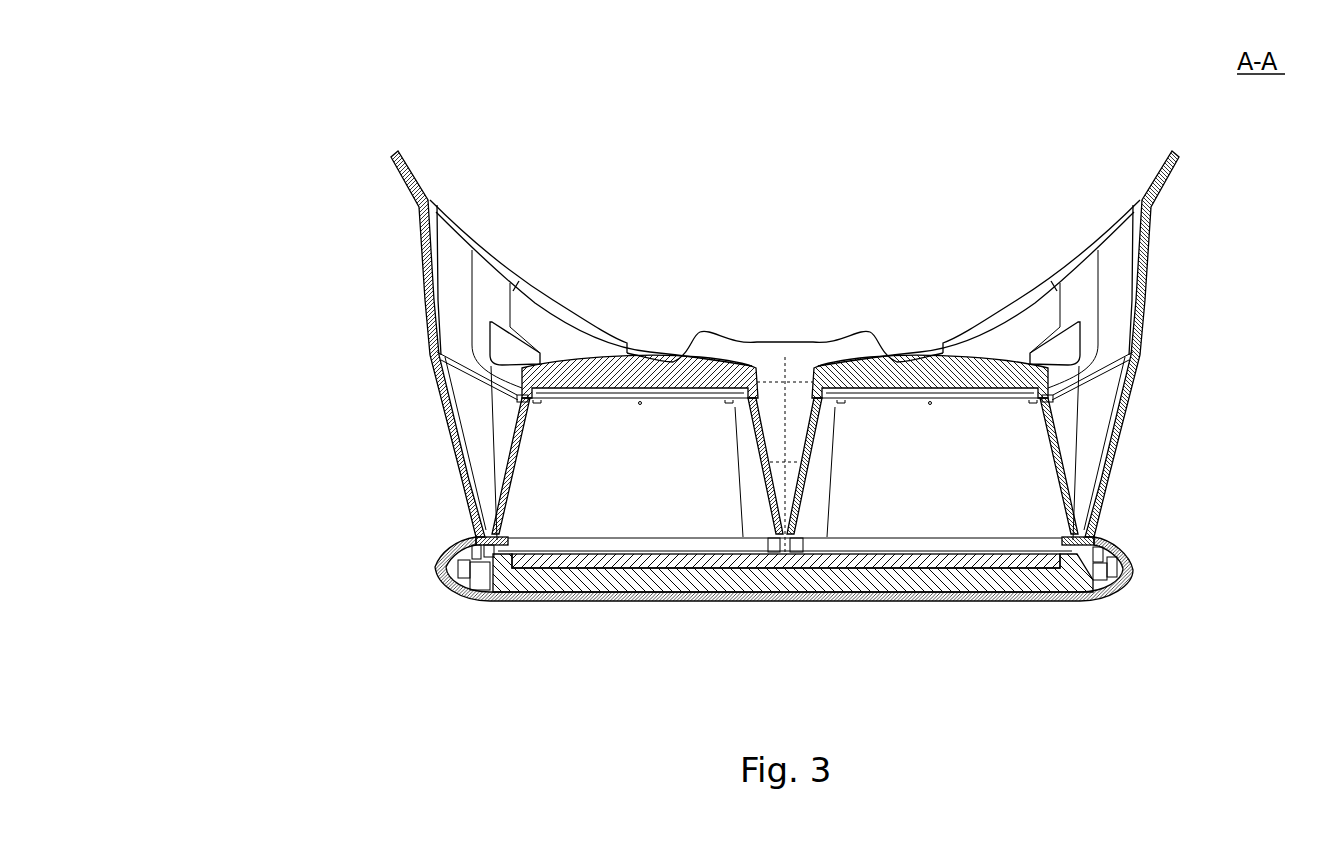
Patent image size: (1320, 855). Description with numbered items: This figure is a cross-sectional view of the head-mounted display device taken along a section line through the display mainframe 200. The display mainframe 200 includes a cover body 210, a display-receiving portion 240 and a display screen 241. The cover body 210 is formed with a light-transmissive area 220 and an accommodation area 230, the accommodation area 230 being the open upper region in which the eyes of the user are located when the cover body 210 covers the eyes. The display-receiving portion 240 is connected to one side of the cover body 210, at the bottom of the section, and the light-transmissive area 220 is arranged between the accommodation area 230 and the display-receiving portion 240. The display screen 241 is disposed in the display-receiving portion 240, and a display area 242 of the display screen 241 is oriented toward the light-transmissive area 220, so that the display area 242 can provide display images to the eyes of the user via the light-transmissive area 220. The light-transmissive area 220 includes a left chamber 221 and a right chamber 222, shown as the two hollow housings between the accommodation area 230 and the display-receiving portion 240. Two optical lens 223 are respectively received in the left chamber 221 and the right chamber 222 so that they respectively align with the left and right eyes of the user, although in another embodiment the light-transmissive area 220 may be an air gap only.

The display mainframe 200 is at (678, 357).
The cover body 210 is at (710, 333).
The light-transmissive area 220 is at (690, 446).
The left chamber 221 is at (520, 430).
The right chamber 222 is at (816, 489).
The optical lens 223 is at (815, 342).
The accommodation area 230 is at (486, 165).
The display-receiving portion 240 is at (687, 435).
The display screen 241 is at (687, 563).
The display area 242 is at (970, 565).